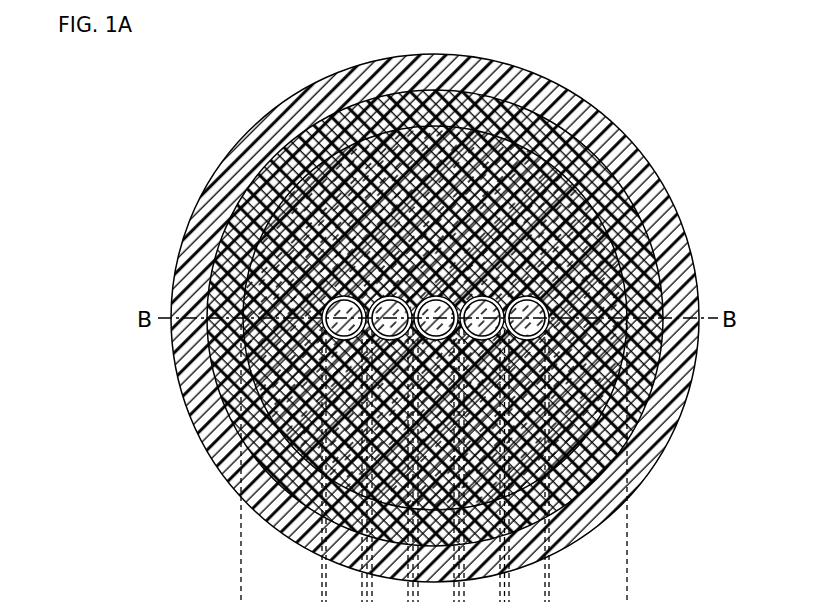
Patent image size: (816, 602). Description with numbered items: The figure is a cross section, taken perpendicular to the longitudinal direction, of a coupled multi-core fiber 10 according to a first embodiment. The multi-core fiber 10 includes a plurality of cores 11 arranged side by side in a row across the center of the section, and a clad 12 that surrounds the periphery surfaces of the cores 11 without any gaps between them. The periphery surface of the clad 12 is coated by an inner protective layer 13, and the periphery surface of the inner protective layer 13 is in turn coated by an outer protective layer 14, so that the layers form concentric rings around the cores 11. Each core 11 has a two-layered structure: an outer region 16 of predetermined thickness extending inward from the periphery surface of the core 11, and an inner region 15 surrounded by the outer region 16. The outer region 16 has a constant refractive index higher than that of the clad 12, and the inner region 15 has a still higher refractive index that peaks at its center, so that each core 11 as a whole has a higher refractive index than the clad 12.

The multi-core fiber 10 is at (476, 296).
The core 11 is at (551, 309).
The clad 12 is at (612, 300).
The inner protective layer 13 is at (484, 318).
The outer protective layer 14 is at (466, 296).
The inner region 15 is at (545, 330).
The outer region 16 is at (543, 343).